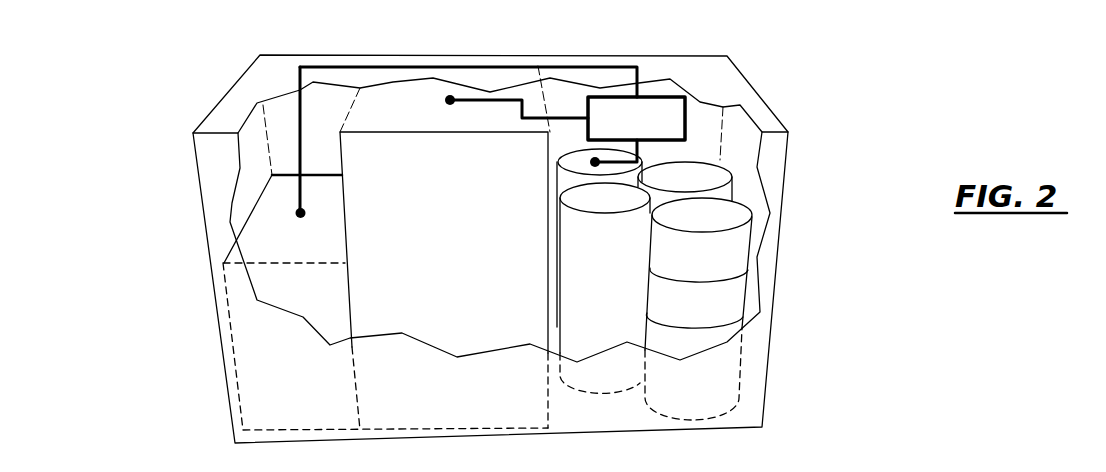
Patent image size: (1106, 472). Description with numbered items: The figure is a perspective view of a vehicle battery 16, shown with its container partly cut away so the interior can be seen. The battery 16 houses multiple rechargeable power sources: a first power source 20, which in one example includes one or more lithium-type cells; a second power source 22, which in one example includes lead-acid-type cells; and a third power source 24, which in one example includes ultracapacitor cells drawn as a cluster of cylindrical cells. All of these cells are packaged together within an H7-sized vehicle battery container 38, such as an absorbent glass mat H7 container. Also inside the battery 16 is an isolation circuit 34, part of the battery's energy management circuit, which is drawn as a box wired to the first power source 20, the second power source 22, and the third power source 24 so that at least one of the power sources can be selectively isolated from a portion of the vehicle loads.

The vehicle battery 16 is at (786, 296).
The first power source 20 is at (477, 245).
The second power source 22 is at (318, 303).
The third power source 24 is at (712, 270).
The isolation circuit 34 is at (650, 131).
The vehicle battery container 38 is at (231, 95).